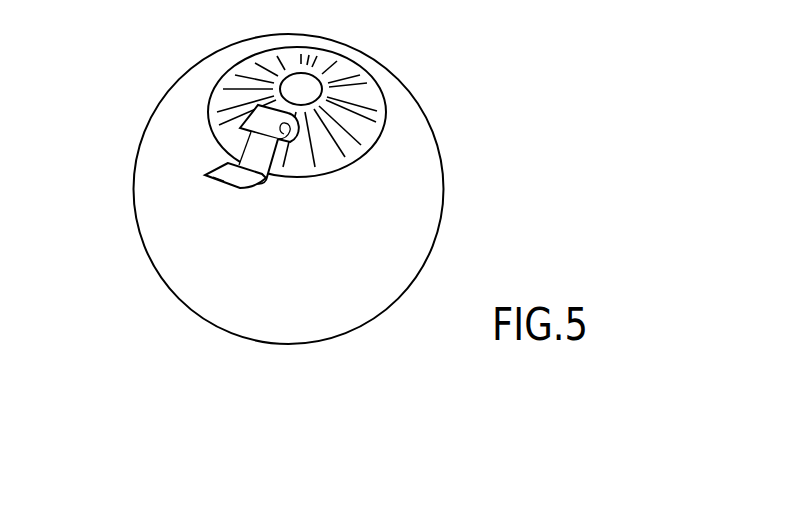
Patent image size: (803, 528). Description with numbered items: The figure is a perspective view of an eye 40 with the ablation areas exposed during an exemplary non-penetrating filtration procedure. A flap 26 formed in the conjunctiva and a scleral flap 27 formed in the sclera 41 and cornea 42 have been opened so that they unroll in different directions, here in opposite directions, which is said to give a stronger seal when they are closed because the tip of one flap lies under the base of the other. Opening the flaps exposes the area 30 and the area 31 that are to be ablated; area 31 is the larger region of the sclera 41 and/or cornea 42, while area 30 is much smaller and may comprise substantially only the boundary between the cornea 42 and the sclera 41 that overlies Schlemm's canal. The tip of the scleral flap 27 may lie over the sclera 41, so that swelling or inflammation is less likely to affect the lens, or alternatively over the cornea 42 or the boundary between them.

The flap 26 is at (205, 172).
The scleral flap 27 is at (280, 103).
The area 30 is at (260, 138).
The area 31 is at (240, 157).
The eye 40 is at (506, 202).
The sclera 41 is at (358, 267).
The cornea 42 is at (377, 110).